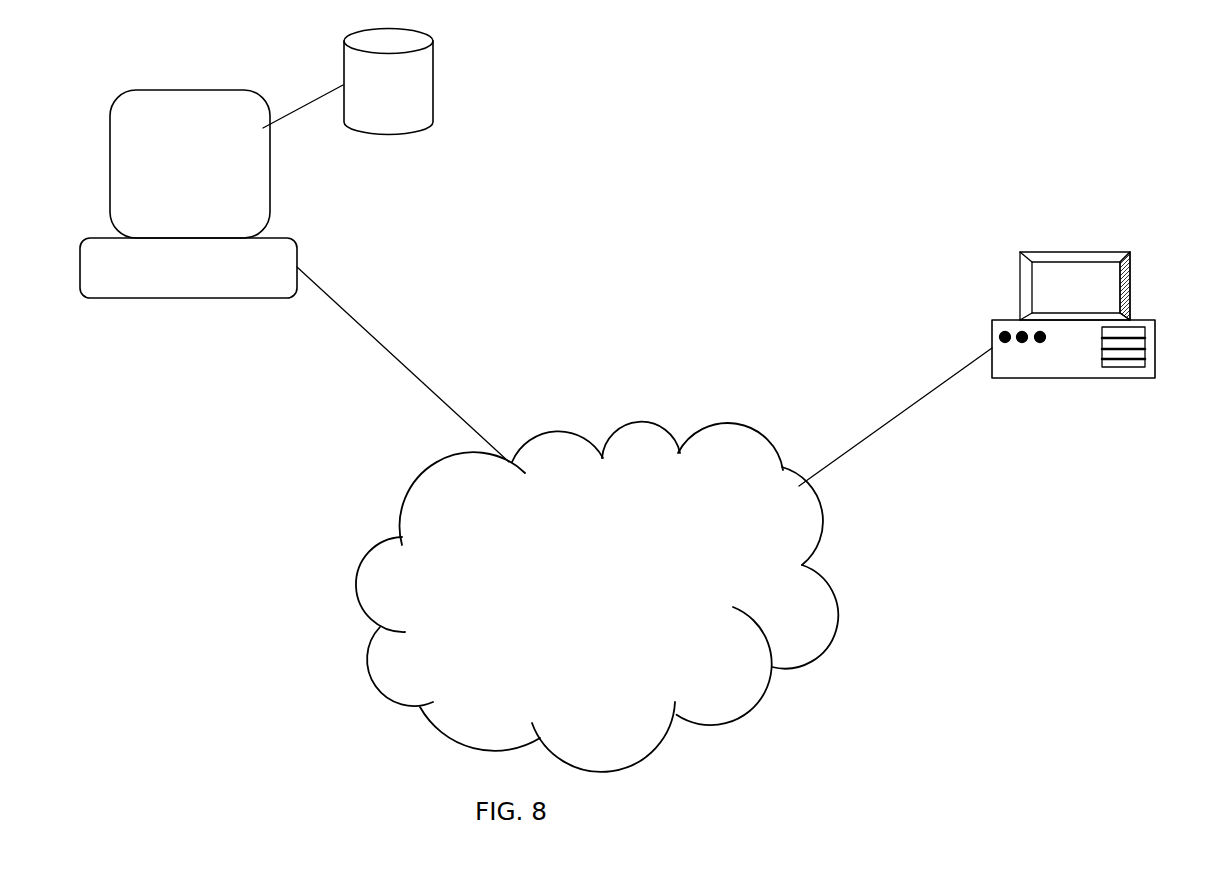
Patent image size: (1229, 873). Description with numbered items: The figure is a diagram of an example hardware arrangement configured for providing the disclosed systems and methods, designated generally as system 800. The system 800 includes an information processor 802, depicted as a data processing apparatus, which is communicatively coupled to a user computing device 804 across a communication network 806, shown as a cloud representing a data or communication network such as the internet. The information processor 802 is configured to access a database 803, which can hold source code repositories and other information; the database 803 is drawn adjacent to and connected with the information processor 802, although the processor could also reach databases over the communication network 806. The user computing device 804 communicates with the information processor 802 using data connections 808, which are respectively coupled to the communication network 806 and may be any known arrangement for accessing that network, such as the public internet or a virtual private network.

The system 800 is at (1087, 186).
The information processor 802 is at (93, 235).
The database 803 is at (342, 67).
The user computing device 804 is at (1018, 283).
The communication network 806 is at (377, 543).
The data connection 808 is at (462, 420).